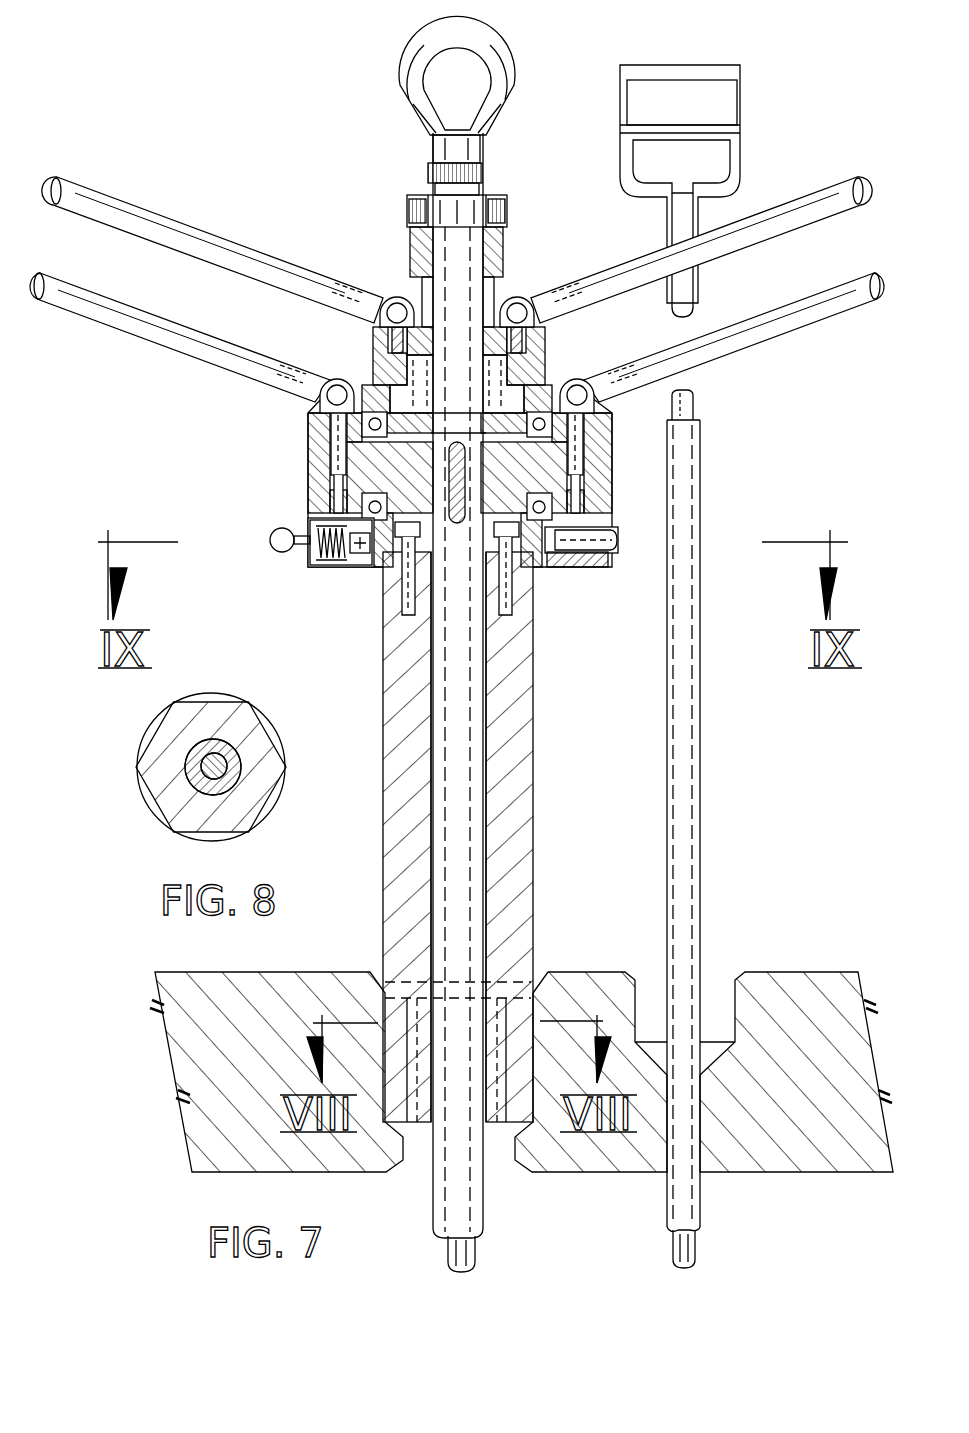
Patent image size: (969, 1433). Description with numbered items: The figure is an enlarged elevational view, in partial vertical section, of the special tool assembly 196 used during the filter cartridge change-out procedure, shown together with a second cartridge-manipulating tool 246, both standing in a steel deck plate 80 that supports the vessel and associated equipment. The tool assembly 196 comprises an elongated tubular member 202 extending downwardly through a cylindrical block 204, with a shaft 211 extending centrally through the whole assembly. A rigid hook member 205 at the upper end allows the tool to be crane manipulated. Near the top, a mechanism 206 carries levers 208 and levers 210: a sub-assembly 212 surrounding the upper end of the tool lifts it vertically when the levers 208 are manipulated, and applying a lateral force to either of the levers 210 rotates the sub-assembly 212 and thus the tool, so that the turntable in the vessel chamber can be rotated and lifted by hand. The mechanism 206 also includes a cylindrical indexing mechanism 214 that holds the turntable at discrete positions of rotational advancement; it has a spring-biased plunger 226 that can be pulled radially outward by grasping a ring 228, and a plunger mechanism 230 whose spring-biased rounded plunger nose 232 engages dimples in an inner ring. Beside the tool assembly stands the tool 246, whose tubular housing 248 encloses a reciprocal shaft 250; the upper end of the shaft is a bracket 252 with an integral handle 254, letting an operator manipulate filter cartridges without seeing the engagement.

The steel deck plate 80 is at (824, 968).
The tool assembly 196 is at (382, 232).
The elongated tubular member 202 is at (422, 294).
The cylindrical block 204 is at (538, 737).
The rigid hook member 205 is at (482, 44).
The mechanism 206 is at (562, 340).
The levers 208 is at (117, 186).
The levers 210 is at (47, 300).
The shaft 211 is at (447, 1254).
The sub-assembly 212 is at (600, 408).
The indexing mechanism 214 is at (592, 572).
The spring-biased plunger 226 is at (340, 568).
The ring 228 is at (282, 528).
The plunger mechanism 230 is at (617, 542).
The spring-biased rounded plunger nose 232 is at (536, 562).
The tool 246 is at (691, 829).
The tubular housing 248 is at (703, 612).
The reciprocal shaft 250 is at (672, 1254).
The bracket 252 is at (697, 62).
The handle 254 is at (712, 117).